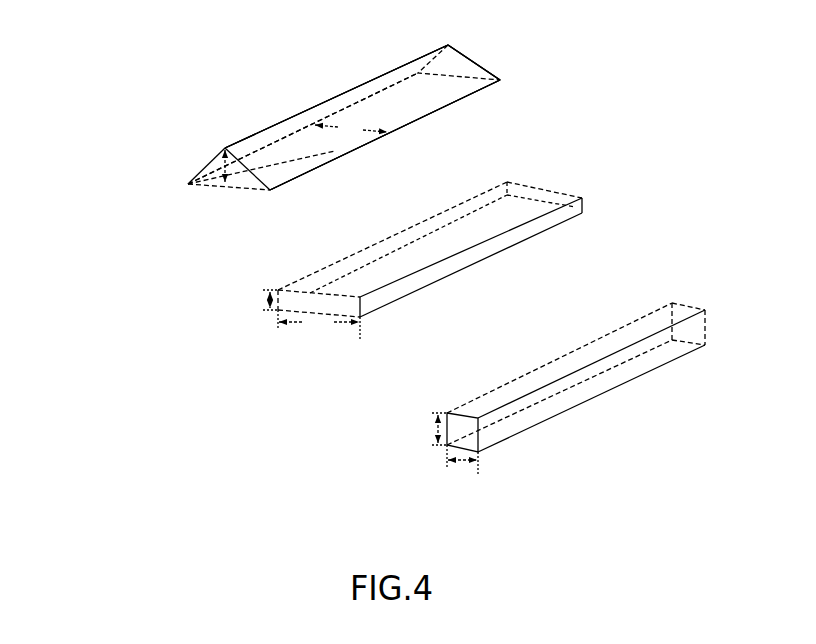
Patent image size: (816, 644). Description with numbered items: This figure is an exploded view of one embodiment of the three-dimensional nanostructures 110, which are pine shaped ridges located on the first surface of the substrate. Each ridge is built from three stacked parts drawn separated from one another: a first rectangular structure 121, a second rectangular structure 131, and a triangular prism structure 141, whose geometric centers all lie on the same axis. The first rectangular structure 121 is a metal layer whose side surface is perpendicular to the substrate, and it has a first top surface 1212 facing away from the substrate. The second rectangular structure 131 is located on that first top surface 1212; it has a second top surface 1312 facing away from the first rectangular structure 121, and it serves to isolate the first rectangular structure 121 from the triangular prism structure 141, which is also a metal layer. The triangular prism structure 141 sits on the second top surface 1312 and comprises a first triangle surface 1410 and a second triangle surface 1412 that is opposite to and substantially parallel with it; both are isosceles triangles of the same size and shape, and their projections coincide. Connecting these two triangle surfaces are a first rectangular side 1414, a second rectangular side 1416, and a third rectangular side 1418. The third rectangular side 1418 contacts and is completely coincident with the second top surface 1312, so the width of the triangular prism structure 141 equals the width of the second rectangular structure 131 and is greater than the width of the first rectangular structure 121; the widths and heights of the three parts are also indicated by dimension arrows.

The three-dimensional nanostructures 110 is at (137, 337).
The first rectangular structure 121 is at (595, 330).
The first top surface 1212 is at (660, 310).
The second rectangular structure 131 is at (437, 195).
The second top surface 1312 is at (515, 212).
The triangular prism structure 141 is at (240, 105).
The first triangle surface 1410 is at (188, 185).
The second triangle surface 1412 is at (443, 66).
The first rectangular side 1414 is at (310, 143).
The second rectangular side 1416 is at (388, 74).
The third rectangular side 1418 is at (408, 107).